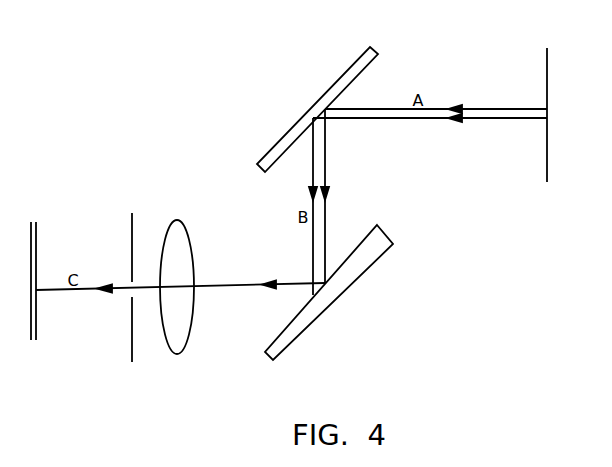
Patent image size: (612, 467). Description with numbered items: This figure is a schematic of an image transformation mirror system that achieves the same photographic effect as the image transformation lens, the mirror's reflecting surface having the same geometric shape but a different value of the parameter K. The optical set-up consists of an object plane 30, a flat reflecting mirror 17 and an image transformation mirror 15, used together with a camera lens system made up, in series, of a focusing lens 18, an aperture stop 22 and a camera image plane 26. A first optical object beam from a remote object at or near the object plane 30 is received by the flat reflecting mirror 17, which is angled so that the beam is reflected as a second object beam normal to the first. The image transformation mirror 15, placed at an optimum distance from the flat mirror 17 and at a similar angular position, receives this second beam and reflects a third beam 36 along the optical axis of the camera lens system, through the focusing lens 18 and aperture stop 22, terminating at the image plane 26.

The image transformation mirror 15 is at (362, 247).
The flat reflecting mirror 17 is at (373, 64).
The focusing lens 18 is at (185, 256).
The aperture stop 22 is at (133, 236).
The camera image plane 26 is at (38, 256).
The object plane 30 is at (548, 97).
The reflected beam 36 is at (260, 282).